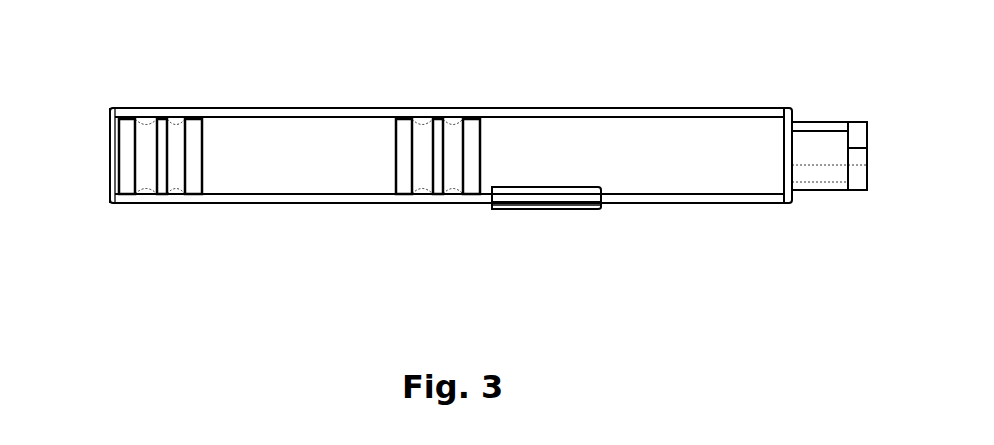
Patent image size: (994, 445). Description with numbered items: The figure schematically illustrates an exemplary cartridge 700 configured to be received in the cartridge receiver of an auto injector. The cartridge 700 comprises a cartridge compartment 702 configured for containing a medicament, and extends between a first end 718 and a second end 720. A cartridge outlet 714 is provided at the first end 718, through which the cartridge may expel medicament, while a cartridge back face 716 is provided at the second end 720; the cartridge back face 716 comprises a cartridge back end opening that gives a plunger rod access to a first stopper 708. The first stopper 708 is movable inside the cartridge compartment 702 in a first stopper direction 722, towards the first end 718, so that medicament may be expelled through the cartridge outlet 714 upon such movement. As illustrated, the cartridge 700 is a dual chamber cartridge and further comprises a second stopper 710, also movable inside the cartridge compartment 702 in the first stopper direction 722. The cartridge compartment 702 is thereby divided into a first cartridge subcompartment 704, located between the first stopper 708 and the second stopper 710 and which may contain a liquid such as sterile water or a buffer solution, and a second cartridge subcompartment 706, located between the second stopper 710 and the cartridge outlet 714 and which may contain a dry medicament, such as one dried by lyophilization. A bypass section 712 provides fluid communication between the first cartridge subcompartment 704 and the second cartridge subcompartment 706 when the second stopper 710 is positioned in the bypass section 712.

The cartridge 700 is at (700, 61).
The cartridge compartment 702 is at (383, 182).
The first cartridge subcompartment 704 is at (268, 135).
The second cartridge subcompartment 706 is at (712, 160).
The first stopper 708 is at (165, 152).
The second stopper 710 is at (438, 145).
The bypass section 712 is at (557, 208).
The cartridge outlet 714 is at (868, 158).
The first end 718 is at (879, 200).
The cartridge back face 716 is at (110, 111).
The second end 720 is at (112, 246).
The first stopper direction 722 is at (594, 303).